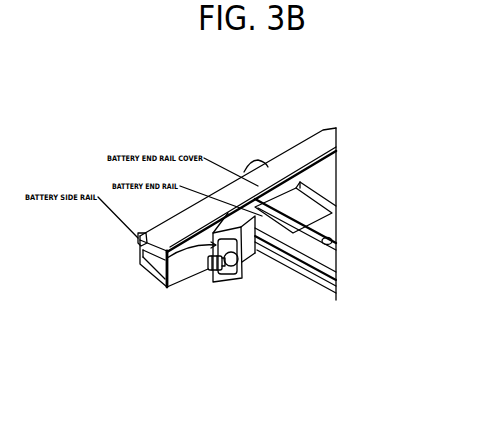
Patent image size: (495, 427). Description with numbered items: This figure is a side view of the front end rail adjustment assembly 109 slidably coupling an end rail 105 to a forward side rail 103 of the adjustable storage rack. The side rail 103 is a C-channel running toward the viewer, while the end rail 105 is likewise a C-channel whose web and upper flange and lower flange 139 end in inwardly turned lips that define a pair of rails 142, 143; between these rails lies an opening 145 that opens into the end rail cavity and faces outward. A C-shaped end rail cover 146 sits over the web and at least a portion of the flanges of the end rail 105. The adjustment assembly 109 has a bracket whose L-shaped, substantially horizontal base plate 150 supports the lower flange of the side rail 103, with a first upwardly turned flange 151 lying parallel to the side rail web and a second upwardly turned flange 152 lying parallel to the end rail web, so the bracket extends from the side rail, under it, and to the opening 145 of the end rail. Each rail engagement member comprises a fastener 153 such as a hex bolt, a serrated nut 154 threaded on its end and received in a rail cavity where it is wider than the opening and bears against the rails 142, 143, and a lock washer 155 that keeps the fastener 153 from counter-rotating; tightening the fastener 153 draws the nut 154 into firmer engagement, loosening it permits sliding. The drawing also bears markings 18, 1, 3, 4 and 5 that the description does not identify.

The side rail 103 is at (307, 153).
The end rail 105 is at (318, 222).
The front end rail adjustment assembly 109 is at (140, 265).
The lower flange 139 is at (338, 287).
The rail 142 is at (312, 212).
The rail 143 is at (300, 270).
The opening 145 is at (318, 268).
The end rail cover 146 is at (293, 190).
The base plate 150 is at (238, 283).
The first upwardly turned flange 151 is at (257, 160).
The second upwardly turned flange 152 is at (254, 252).
The fastener 153 is at (208, 266).
The nut 154 is at (241, 226).
The lock washer 155 is at (224, 268).
The rail edge 18 is at (332, 253).
The item 1 is at (240, 278).
The item 3 is at (222, 272).
The item 4 is at (229, 267).
The item 5 is at (270, 262).